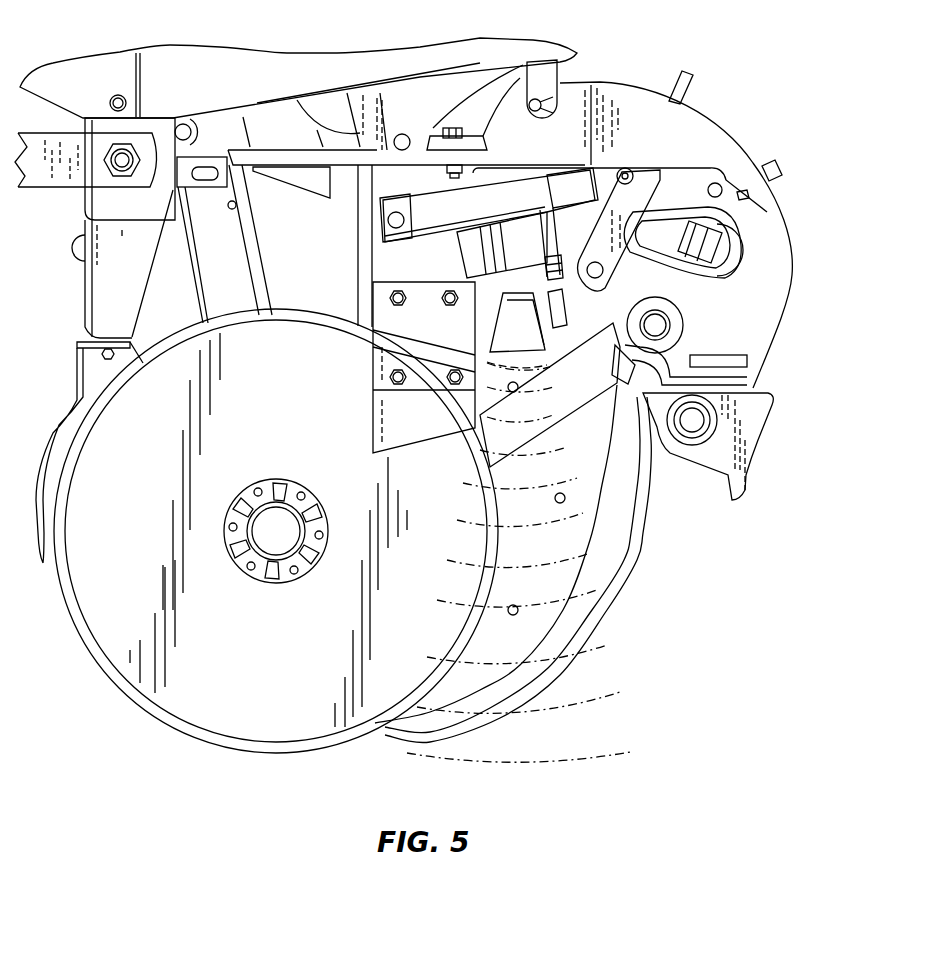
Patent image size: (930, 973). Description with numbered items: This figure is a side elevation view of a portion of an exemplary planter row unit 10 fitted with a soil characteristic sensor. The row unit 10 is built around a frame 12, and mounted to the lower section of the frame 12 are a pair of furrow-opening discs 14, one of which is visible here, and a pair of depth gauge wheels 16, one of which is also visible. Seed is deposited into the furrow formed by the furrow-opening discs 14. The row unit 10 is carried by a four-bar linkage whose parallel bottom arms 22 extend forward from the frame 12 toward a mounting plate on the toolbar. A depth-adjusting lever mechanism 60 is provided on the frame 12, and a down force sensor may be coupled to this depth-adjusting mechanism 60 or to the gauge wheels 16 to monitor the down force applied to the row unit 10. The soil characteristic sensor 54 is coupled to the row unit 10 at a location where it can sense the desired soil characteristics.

The planter row unit 10 is at (758, 84).
The frame 12 is at (782, 320).
The furrow-opening discs 14 is at (202, 693).
The depth gauge wheels 16 is at (643, 533).
The bottom arms 22 is at (40, 177).
The soil characteristic sensor 54 is at (520, 323).
The depth-adjusting lever mechanism 60 is at (750, 228).